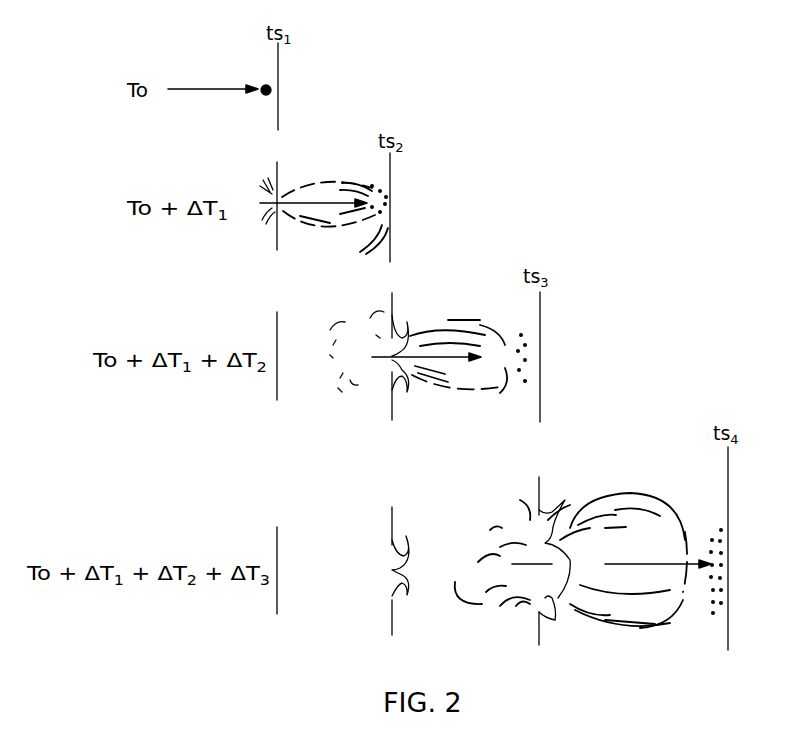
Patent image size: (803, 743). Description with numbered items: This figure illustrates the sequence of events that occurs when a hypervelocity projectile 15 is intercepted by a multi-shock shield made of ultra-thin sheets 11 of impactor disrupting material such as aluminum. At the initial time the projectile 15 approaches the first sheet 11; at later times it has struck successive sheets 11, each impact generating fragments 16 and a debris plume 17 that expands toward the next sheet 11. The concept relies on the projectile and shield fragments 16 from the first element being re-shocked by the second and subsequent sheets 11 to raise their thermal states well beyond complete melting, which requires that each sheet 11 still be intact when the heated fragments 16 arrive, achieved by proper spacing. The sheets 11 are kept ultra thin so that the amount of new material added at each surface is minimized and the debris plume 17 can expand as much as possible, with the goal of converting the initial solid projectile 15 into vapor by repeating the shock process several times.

The sheet 11 is at (280, 72).
The hypervelocity projectile 15 is at (264, 80).
The fragments 16 is at (375, 226).
The debris plume 17 is at (348, 176).